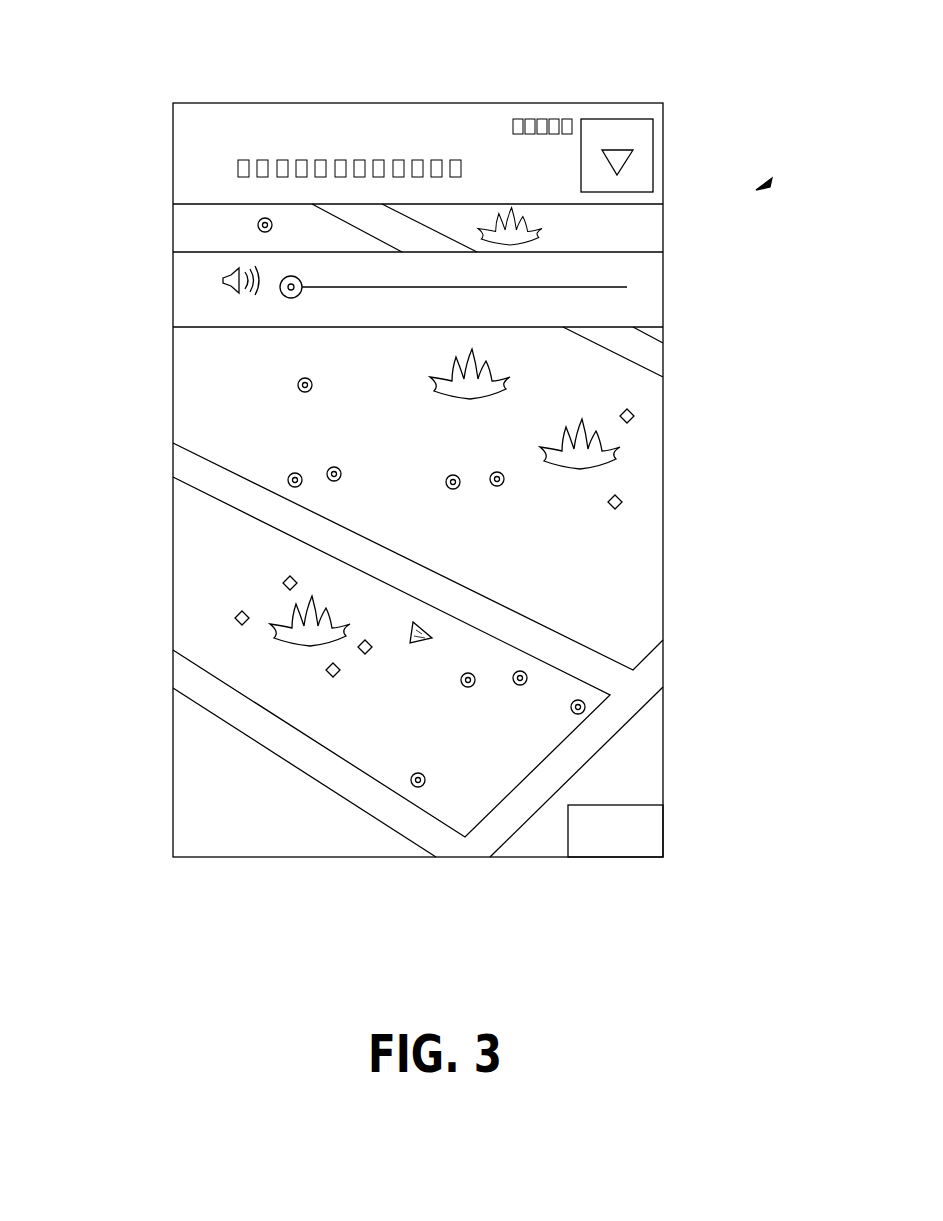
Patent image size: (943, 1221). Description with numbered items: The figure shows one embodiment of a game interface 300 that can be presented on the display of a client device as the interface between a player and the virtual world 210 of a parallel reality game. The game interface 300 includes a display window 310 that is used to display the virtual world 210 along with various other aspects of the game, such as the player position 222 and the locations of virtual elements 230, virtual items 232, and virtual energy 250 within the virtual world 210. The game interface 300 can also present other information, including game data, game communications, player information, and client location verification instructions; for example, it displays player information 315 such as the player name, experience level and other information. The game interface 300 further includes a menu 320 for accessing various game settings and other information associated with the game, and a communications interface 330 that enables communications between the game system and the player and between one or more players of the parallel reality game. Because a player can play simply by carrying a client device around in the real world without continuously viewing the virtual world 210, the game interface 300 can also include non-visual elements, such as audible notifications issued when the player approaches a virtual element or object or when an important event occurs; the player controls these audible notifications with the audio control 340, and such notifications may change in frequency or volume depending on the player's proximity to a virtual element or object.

The game interface 300 is at (390, 55).
The player information 315 is at (185, 125).
The menu 320 is at (653, 157).
The display window 310 is at (655, 233).
The audio control 340 is at (185, 271).
The virtual world 210 is at (655, 563).
The virtual elements 230 is at (445, 376).
The virtual energy 250 is at (312, 388).
The virtual items 232 is at (282, 583).
The player position 222 is at (407, 635).
The communications interface 330 is at (658, 835).